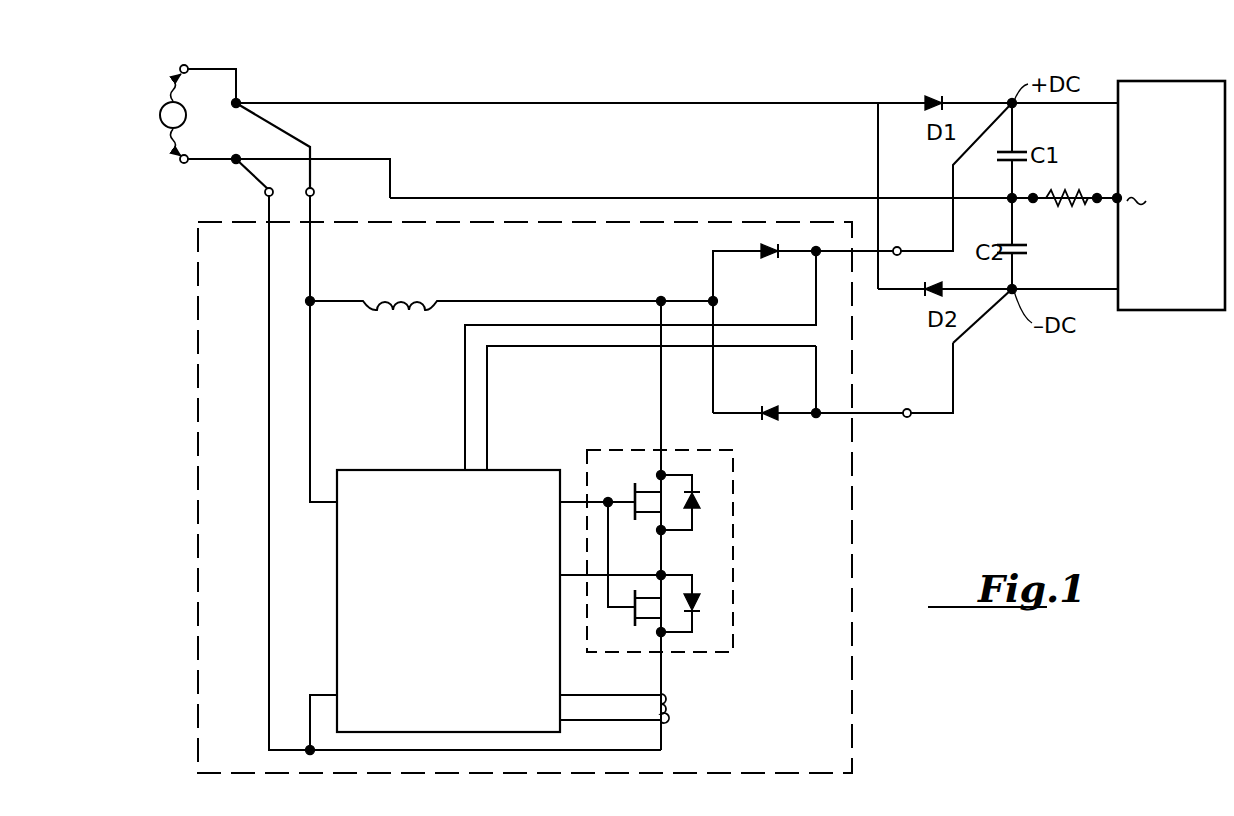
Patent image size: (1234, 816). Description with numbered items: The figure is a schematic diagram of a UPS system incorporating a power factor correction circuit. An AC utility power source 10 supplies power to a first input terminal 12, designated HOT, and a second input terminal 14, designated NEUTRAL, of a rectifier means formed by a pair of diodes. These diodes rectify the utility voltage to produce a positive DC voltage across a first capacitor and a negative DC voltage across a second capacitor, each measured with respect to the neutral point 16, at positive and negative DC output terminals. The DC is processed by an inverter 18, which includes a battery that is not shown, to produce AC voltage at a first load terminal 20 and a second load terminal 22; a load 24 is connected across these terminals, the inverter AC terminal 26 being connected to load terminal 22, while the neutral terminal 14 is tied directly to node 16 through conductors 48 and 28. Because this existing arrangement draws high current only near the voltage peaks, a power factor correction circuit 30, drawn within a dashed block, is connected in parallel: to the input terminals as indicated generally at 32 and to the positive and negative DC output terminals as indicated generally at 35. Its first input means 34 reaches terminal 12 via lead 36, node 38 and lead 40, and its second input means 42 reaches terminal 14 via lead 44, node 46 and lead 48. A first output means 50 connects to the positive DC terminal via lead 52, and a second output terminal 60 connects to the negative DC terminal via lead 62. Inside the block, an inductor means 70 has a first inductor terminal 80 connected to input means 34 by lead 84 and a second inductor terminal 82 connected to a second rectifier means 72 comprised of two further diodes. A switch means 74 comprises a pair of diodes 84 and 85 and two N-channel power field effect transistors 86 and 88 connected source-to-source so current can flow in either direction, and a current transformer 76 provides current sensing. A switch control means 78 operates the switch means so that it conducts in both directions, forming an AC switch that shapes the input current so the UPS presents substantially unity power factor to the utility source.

The AC utility power source 10 is at (120, 87).
The first input terminal 12 is at (188, 66).
The second input terminal 14 is at (185, 164).
The neutral point 16 is at (1010, 197).
The inverter 18 is at (1188, 142).
The first load terminal 20 is at (1035, 201).
The second load terminal 22 is at (1098, 202).
The load 24 is at (1072, 188).
The inverter AC terminal 26 is at (1120, 197).
The conductor 28 is at (517, 198).
The power factor correction circuit 30 is at (855, 565).
The connection to rectifier input terminals 32 is at (230, 182).
The first input means 34 is at (314, 192).
The connection to rectifier output terminals 35 is at (1003, 337).
The lead 36 is at (282, 130).
The node 38 is at (240, 100).
The lead 40 is at (238, 67).
The second input means 42 is at (271, 190).
The lead 44 is at (253, 179).
The node 46 is at (237, 156).
The lead 48 is at (205, 157).
The first output means 50 is at (897, 248).
The lead 52 is at (948, 166).
The second output terminal 60 is at (907, 418).
The lead 62 is at (955, 402).
The inductor means 70 is at (420, 297).
The rectifier means 72 is at (805, 428).
The switch means 74 is at (750, 565).
The current transformer 76 is at (668, 705).
The switch control means 78 is at (423, 470).
The first inductor terminal 80 is at (313, 304).
The second inductor terminal 82 is at (661, 297).
The lead / diode 84 is at (313, 268).
The diode 85 is at (696, 599).
The N-channel power field effect transistor 86 is at (624, 482).
The N-channel power field effect transistor 88 is at (625, 622).